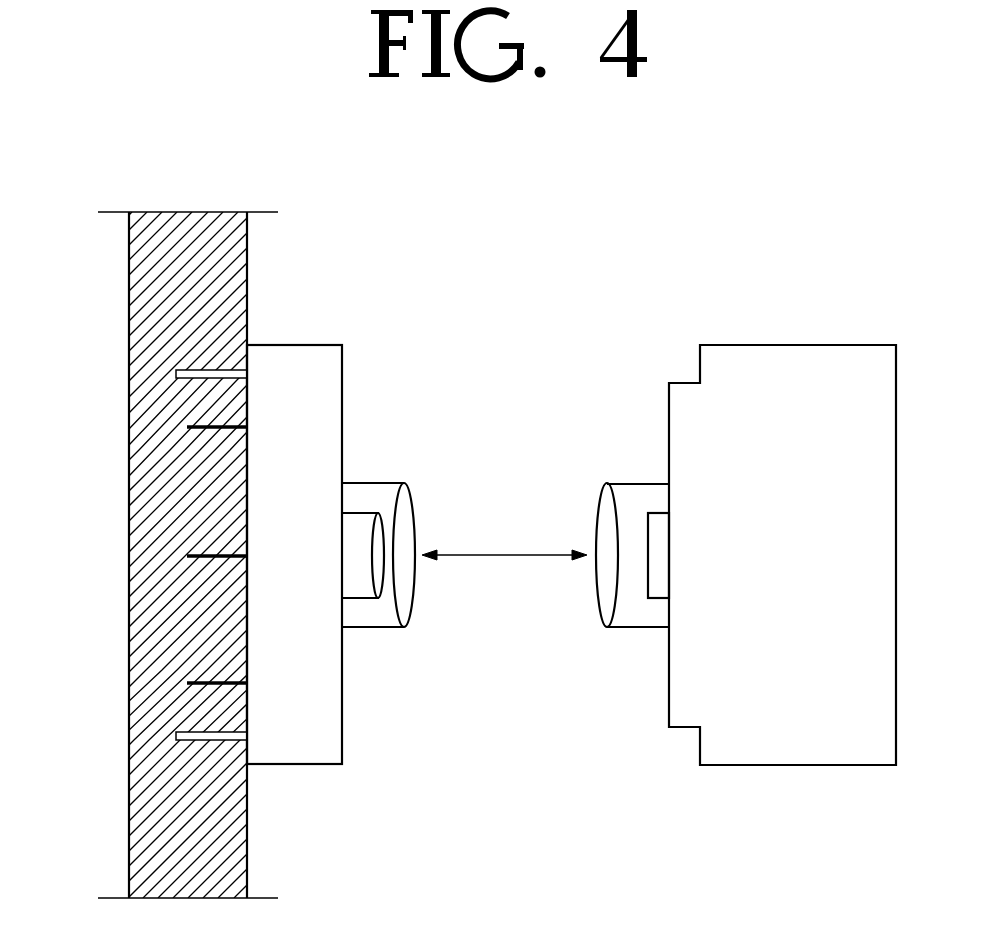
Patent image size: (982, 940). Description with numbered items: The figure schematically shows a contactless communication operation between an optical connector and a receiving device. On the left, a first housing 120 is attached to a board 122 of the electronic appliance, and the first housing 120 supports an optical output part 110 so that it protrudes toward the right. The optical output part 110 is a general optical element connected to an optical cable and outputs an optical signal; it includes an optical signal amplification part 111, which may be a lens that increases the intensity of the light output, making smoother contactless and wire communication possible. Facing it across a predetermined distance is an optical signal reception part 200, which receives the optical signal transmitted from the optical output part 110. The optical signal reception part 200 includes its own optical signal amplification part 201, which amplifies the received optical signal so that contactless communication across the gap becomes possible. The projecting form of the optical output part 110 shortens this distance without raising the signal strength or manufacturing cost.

The optical output part 110 is at (362, 513).
The optical signal amplification part 111 is at (413, 507).
The first housing 120 is at (293, 352).
The board 122 is at (148, 800).
The optical signal reception part 200 is at (648, 525).
The optical signal amplification part 201 is at (598, 507).